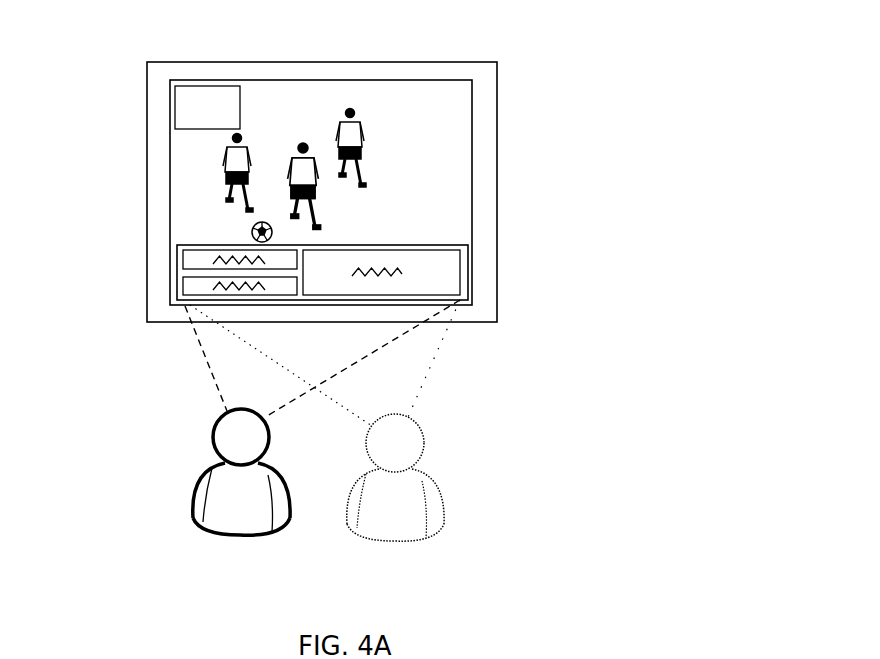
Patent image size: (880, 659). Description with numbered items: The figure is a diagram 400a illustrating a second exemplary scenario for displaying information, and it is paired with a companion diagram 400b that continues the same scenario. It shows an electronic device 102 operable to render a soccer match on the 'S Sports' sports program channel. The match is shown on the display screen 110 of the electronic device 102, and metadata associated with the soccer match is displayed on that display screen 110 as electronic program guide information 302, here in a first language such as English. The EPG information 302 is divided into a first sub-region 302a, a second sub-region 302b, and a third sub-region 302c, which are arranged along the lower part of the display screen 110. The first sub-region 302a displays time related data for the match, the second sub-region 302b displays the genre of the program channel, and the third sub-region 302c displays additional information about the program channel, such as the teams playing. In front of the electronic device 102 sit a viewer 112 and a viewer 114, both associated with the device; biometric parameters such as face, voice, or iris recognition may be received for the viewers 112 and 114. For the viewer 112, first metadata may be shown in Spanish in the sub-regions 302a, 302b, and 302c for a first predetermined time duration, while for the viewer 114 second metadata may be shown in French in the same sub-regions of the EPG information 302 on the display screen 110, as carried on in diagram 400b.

The diagram 400a is at (686, 96).
The diagram 400b is at (706, 654).
The electronic device 102 is at (497, 122).
The display screen 110 is at (472, 190).
The electronic program guide (EPG) information 302 is at (324, 231).
The first sub-region 302a is at (183, 265).
The second sub-region 302b is at (183, 293).
The third sub-region 302c is at (460, 300).
The viewer 112 is at (283, 533).
The viewer 114 is at (442, 528).